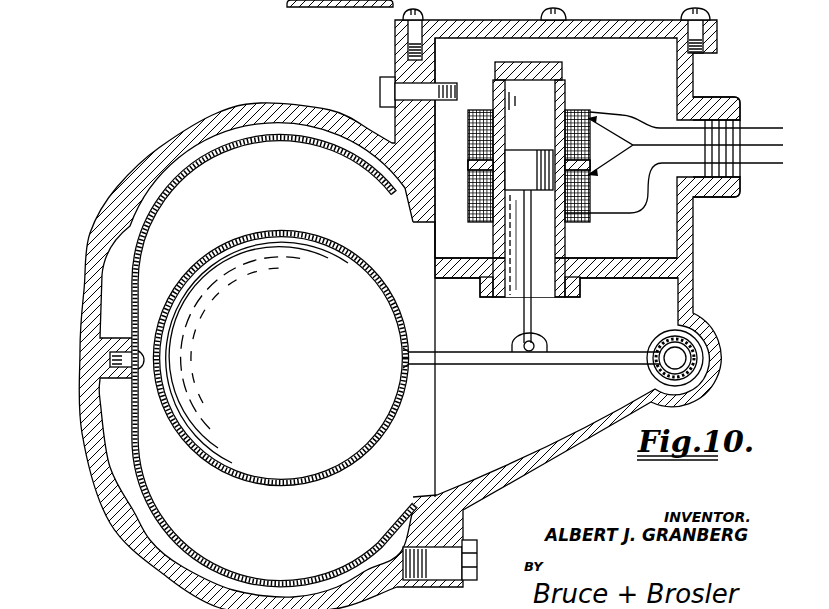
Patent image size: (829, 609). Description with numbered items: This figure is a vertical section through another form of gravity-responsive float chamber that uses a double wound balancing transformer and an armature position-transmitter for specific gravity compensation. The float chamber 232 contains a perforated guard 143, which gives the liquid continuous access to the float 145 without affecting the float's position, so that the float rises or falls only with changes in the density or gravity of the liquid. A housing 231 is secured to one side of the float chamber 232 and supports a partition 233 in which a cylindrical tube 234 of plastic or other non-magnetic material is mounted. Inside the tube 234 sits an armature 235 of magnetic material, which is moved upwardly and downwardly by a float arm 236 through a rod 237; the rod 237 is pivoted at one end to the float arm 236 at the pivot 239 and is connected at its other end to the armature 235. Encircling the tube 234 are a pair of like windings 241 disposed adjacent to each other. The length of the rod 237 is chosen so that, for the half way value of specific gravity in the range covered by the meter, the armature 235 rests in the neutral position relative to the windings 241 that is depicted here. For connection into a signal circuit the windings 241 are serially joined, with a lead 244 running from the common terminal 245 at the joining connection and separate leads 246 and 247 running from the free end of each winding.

The perforated guard 143 is at (172, 530).
The float 145 is at (212, 251).
The housing 231 is at (544, 452).
The float chamber 232 is at (82, 448).
The partition 233 is at (603, 279).
The cylindrical tube 234 is at (563, 82).
The armature 235 is at (521, 165).
The float arm 236 is at (440, 352).
The rod 237 is at (522, 290).
The pivot 239 is at (537, 344).
The windings 241 is at (599, 180).
The lead 244 is at (748, 148).
The common terminal 245 is at (674, 164).
The lead 246 is at (757, 128).
The lead 247 is at (738, 197).